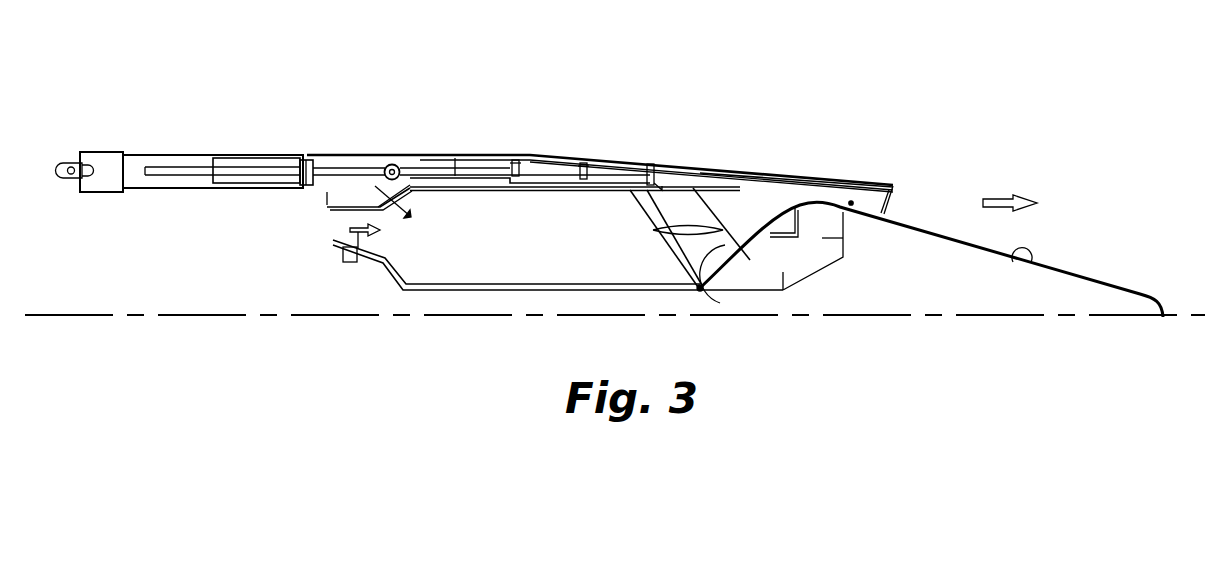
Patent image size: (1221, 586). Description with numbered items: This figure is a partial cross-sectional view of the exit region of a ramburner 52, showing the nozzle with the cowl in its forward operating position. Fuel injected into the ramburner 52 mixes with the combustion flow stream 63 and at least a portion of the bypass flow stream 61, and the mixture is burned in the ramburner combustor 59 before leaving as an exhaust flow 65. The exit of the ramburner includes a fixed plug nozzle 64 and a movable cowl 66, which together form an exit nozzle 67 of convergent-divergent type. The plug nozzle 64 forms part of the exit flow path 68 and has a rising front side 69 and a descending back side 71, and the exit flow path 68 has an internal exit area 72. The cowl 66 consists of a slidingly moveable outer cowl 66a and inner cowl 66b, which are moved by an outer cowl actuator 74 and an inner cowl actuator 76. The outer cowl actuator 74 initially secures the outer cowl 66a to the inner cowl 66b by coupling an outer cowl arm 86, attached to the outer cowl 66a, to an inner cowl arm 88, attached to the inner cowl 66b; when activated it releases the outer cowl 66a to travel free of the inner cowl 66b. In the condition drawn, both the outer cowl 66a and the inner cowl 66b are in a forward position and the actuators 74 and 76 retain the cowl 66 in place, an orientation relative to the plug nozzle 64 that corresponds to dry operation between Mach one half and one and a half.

The ramburner 52 is at (607, 82).
The ramburner combustor 59 is at (557, 244).
The bypass flow stream 61 is at (394, 164).
The combustion flow stream 63 is at (357, 262).
The plug nozzle 64 is at (933, 272).
The exhaust flow 65 is at (1000, 195).
The movable cowl 66 is at (792, 146).
The outer cowl 66a is at (826, 180).
The inner cowl 66b is at (792, 192).
The exit nozzle 67 is at (911, 148).
The exit flow path 68 is at (851, 203).
The rising front side 69 is at (700, 291).
The descending back side 71 is at (1013, 262).
The internal exit area 72 is at (890, 203).
The outer cowl actuator 74 is at (538, 140).
The inner cowl actuator 76 is at (265, 154).
The outer cowl arm 86 is at (548, 157).
The inner cowl arm 88 is at (457, 155).